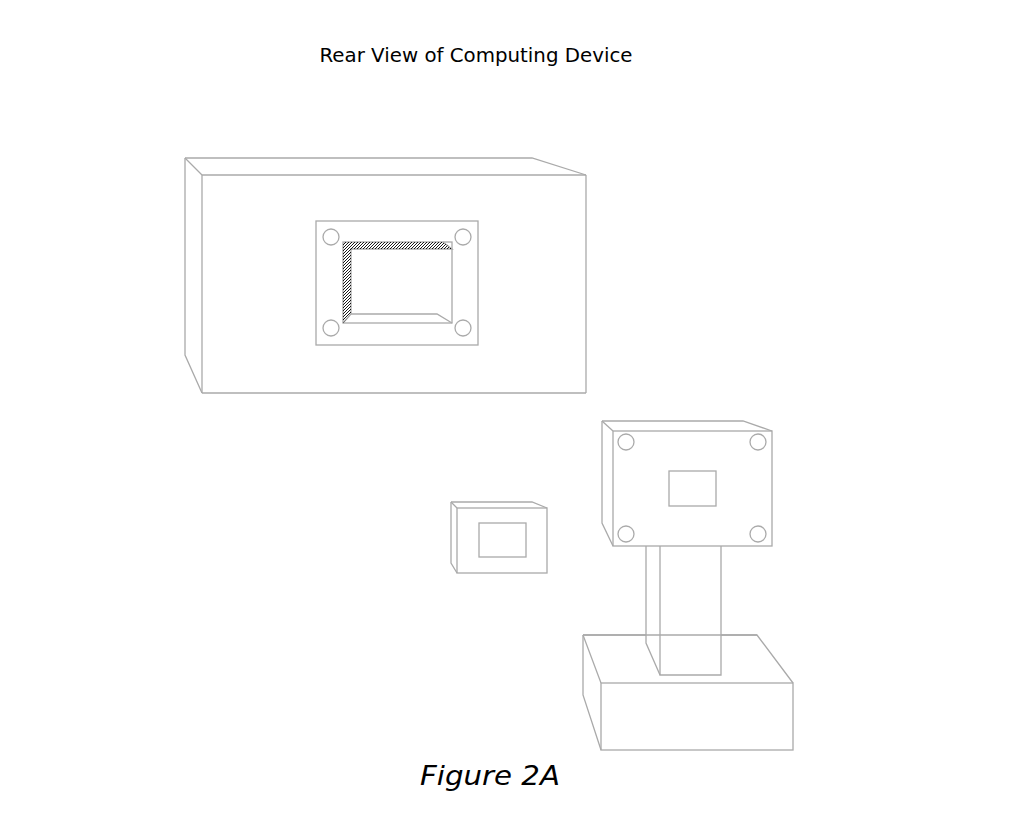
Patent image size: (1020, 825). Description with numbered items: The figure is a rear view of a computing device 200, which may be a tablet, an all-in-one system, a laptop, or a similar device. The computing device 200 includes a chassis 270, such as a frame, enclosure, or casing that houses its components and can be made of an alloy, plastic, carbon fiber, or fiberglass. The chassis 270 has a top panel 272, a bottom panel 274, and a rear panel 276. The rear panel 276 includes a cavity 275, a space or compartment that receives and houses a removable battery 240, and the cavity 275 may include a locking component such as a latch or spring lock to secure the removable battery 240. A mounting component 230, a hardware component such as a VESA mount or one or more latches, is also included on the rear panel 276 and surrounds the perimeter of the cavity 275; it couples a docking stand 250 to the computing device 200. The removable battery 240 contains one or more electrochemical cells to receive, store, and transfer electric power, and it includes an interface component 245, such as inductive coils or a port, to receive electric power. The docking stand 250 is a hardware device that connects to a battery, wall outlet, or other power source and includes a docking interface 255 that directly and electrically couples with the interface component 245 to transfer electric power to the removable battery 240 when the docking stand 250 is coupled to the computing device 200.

The computing device 200 is at (471, 271).
The mounting component 230 is at (485, 274).
The removable battery 240 is at (436, 527).
The interface component 245 is at (426, 576).
The docking stand 250 is at (736, 551).
The docking interface 255 is at (724, 481).
The chassis 270 is at (321, 271).
The top panel 272 is at (384, 154).
The bottom panel 274 is at (264, 407).
The cavity 275 is at (359, 289).
The rear panel 276 is at (205, 235).